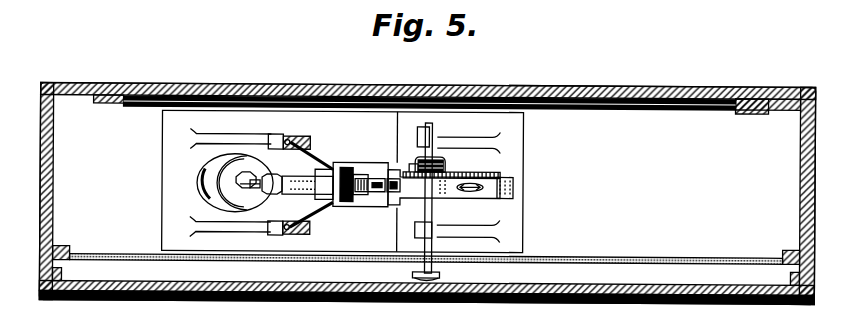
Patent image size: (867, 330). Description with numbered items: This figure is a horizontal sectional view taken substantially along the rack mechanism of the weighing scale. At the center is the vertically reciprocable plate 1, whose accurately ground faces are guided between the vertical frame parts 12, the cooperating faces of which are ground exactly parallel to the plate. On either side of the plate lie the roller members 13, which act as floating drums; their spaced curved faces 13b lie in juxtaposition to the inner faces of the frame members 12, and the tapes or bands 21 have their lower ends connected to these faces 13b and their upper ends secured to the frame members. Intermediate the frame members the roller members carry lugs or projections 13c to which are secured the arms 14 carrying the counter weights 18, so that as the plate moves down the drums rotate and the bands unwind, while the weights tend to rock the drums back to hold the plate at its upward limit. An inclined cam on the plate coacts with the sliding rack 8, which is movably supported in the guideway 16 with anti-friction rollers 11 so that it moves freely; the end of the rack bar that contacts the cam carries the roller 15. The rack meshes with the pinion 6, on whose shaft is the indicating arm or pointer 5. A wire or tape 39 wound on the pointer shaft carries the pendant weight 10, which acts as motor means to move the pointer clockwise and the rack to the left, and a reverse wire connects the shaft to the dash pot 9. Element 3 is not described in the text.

The vertically reciprocable plate 1 is at (344, 170).
The piston 3 is at (372, 195).
The indicating arm or pointer 5 is at (425, 280).
The pinion 6 is at (431, 172).
The sliding rack 8 is at (500, 175).
The dash pot 9 is at (416, 163).
The pendant weight 10 is at (438, 160).
The anti-friction rollers 11 is at (470, 194).
The vertical frame parts 12 is at (278, 137).
The roller members 13 is at (312, 205).
The spaced curved faces 13b is at (297, 140).
The lugs or projections 13c is at (284, 217).
The arms 14 is at (222, 162).
The roller 15 is at (393, 177).
The guideway 16 is at (500, 195).
The counter weights 18 is at (220, 192).
The tapes or bands 21 is at (288, 140).
The wire or tape 39 is at (446, 164).